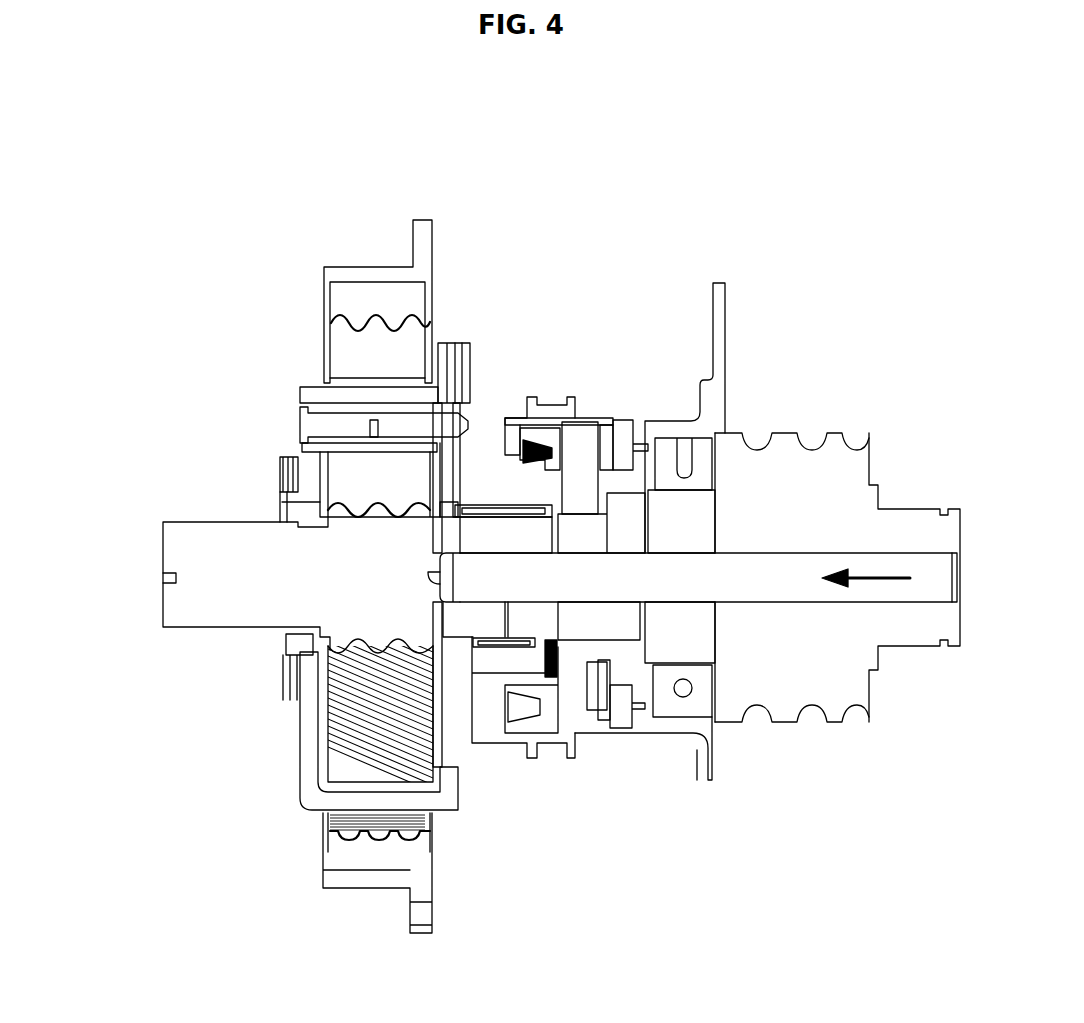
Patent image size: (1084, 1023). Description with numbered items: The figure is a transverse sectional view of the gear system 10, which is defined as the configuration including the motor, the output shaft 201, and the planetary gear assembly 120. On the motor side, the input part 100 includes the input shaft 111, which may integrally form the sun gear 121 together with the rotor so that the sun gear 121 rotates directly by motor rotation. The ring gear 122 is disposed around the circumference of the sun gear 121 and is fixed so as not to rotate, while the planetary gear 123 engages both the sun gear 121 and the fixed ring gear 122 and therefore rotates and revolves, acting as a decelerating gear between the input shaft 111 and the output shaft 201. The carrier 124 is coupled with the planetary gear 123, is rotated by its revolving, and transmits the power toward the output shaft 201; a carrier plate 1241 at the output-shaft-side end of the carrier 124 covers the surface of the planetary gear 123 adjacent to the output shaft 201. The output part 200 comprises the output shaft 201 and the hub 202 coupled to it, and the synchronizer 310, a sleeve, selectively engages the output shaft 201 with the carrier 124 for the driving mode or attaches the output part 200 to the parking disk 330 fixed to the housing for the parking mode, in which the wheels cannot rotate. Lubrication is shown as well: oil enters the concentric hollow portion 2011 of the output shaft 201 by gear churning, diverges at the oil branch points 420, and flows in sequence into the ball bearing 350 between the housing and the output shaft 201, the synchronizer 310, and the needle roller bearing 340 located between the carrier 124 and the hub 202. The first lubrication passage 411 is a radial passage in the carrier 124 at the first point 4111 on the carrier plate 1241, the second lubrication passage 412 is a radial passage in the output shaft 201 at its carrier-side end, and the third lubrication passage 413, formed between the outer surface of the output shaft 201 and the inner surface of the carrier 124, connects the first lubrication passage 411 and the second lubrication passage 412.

The gear system 10 is at (210, 187).
The input part 100 is at (96, 372).
The input shaft 111 is at (175, 543).
The planetary gear assembly 120 is at (152, 380).
The sun gear 121 is at (335, 537).
The ring gear 122 is at (330, 290).
The planetary gear 123 is at (370, 458).
The carrier 124 is at (305, 396).
The carrier plate 1241 is at (440, 477).
The output part 200 is at (665, 323).
The output shaft 201 is at (627, 500).
The hollow portion 2011 is at (757, 576).
The hub 202 is at (578, 437).
The synchronizer 310 is at (553, 410).
The parking disk 330 is at (720, 322).
The needle roller bearing 340 is at (505, 632).
The ball bearing 350 is at (707, 465).
The first lubrication passage 411 is at (450, 497).
The second lubrication passage 412 is at (440, 530).
The third lubrication passage 413 is at (450, 515).
The oil branch points 420 is at (553, 532).
The first point 4111 is at (457, 520).